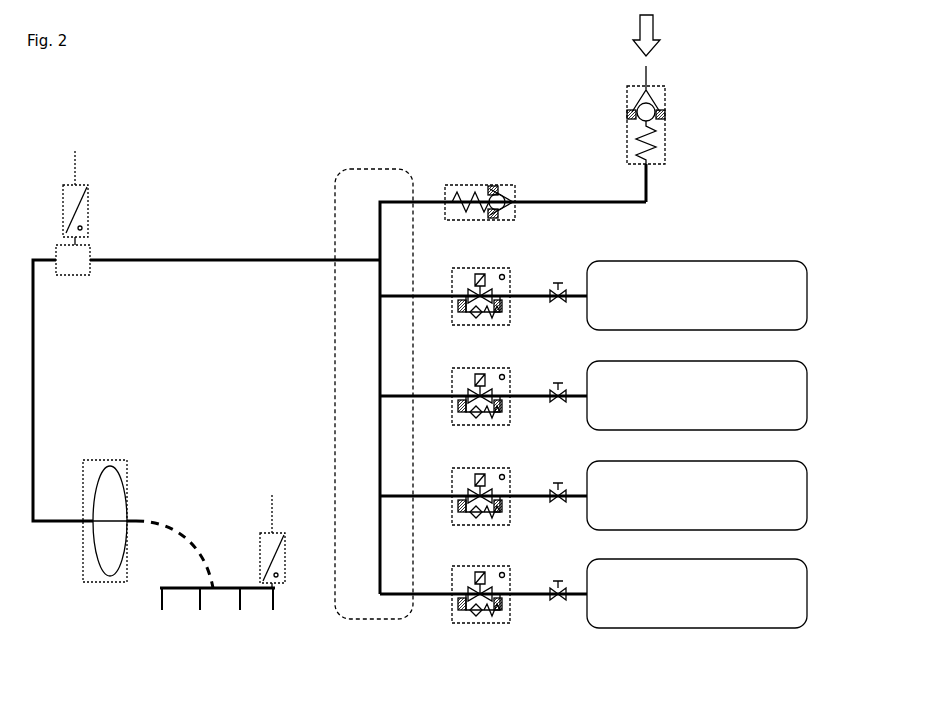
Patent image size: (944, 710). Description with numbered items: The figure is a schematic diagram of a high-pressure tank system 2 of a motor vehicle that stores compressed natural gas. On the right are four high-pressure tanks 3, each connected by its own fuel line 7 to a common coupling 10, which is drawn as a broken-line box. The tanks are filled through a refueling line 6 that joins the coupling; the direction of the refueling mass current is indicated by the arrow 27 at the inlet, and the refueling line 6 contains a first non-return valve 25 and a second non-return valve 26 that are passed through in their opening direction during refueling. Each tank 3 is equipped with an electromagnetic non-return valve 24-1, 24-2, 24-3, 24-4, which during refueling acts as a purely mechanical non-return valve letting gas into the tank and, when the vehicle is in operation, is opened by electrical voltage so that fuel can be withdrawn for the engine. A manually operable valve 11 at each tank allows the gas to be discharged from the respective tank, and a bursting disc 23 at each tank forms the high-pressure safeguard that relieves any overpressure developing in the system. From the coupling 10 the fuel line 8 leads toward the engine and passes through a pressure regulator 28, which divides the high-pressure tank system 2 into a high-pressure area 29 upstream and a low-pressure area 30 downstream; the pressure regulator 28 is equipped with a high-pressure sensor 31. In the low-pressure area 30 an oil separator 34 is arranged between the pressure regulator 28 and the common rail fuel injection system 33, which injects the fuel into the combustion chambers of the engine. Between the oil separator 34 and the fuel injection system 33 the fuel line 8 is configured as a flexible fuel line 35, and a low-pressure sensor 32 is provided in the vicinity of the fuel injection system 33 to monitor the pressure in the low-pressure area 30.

The high-pressure tank system 2 is at (219, 118).
The high-pressure tank 3 is at (693, 304).
The refueling line 6 is at (570, 196).
The fuel line 7 is at (430, 290).
The fuel line 8 is at (187, 221).
The coupling 10 is at (368, 165).
The manually operable valve 11 is at (560, 450).
The bursting disc 23 is at (510, 270).
The electromagnetic non-return valve 24-1 is at (481, 287).
The electromagnetic non-return valve 24-2 is at (481, 387).
The electromagnetic non-return valve 24-3 is at (481, 487).
The electromagnetic non-return valve 24-4 is at (481, 585).
The first non-return valve 25 is at (624, 124).
The second non-return valve 26 is at (462, 183).
The arrow indicating refueling flow direction 27 is at (632, 35).
The pressure regulator 28 is at (52, 250).
The high-pressure area 29 is at (230, 270).
The low-pressure area 30 is at (42, 334).
The high-pressure sensor 31 is at (89, 197).
The low-pressure sensor 32 is at (286, 541).
The common rail fuel injection system 33 is at (228, 586).
The oil separator 34 is at (120, 462).
The flexible fuel line 35 is at (182, 522).